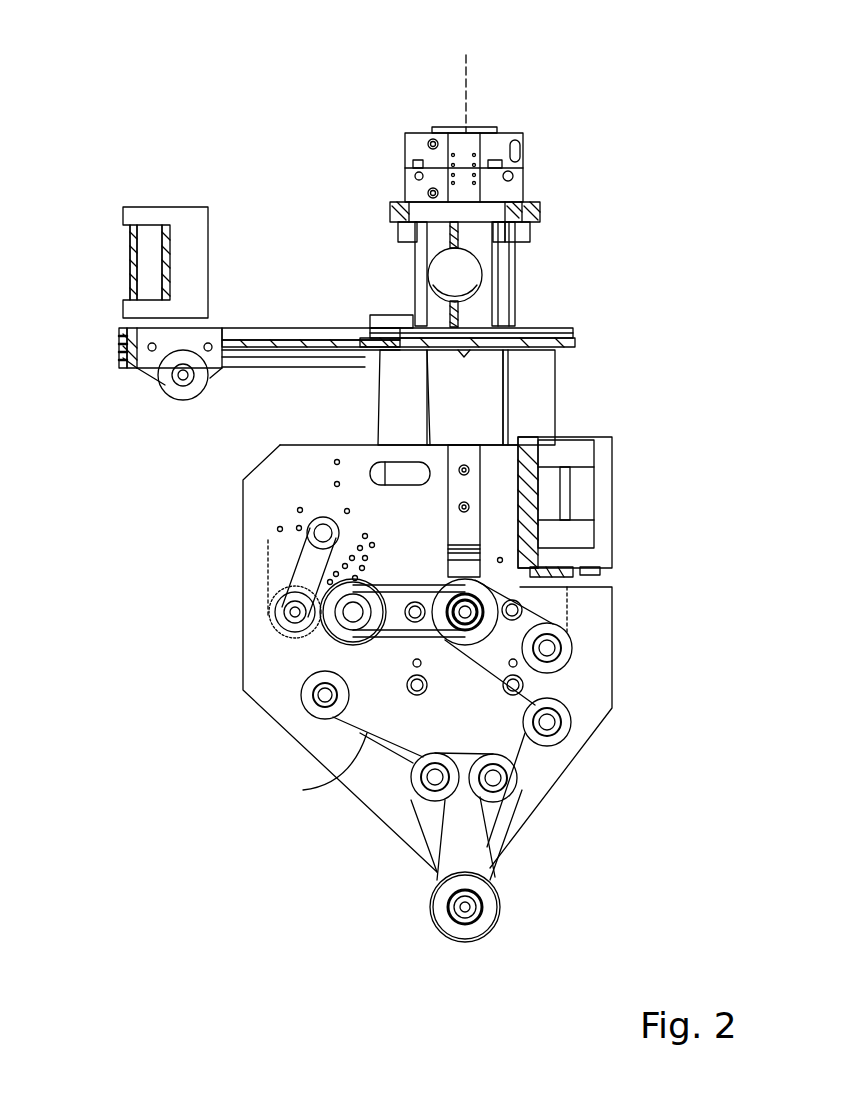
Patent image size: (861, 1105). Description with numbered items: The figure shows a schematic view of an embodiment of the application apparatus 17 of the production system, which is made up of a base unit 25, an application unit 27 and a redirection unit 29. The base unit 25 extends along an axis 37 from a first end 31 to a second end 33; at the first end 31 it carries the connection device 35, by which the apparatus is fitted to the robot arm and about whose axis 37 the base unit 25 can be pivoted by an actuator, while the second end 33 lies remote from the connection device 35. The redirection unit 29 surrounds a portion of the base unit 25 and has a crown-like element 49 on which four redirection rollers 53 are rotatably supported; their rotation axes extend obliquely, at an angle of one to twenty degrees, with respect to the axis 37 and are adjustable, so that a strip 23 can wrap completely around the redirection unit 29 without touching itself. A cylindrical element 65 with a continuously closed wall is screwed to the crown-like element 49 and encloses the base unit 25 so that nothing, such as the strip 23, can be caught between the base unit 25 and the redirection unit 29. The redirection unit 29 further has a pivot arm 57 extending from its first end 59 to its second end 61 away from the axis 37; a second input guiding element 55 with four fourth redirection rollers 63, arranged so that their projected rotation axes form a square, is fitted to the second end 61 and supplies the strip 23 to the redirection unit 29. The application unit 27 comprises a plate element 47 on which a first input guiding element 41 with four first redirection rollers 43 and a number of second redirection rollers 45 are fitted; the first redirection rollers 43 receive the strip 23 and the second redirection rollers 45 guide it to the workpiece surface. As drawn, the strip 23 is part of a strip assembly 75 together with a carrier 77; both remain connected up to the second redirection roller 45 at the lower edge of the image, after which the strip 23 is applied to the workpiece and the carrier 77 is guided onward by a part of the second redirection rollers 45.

The application apparatus 17 is at (706, 250).
The strip 23 is at (496, 730).
The base unit 25 is at (542, 204).
The application unit 27 is at (742, 608).
The redirection unit 29 is at (686, 338).
The first end 31 is at (484, 130).
The second end 33 is at (630, 597).
The connection device 35 is at (525, 150).
The axis 37 is at (466, 82).
The first input guiding element 41 is at (617, 496).
The first redirection rollers 43 is at (555, 490).
The second redirection rollers 45 is at (330, 640).
The plate element 47 is at (267, 504).
The crown-like element 49 is at (562, 332).
The redirection rollers 53 is at (377, 372).
The second input guiding element 55 is at (110, 216).
The pivot arm 57 is at (273, 338).
The first end 59 is at (393, 327).
The second end 61 is at (122, 320).
The fourth redirection rollers 63 is at (148, 280).
The cylindrical element 65 is at (483, 392).
The strip assembly 75 is at (487, 833).
The carrier 77 is at (314, 768).